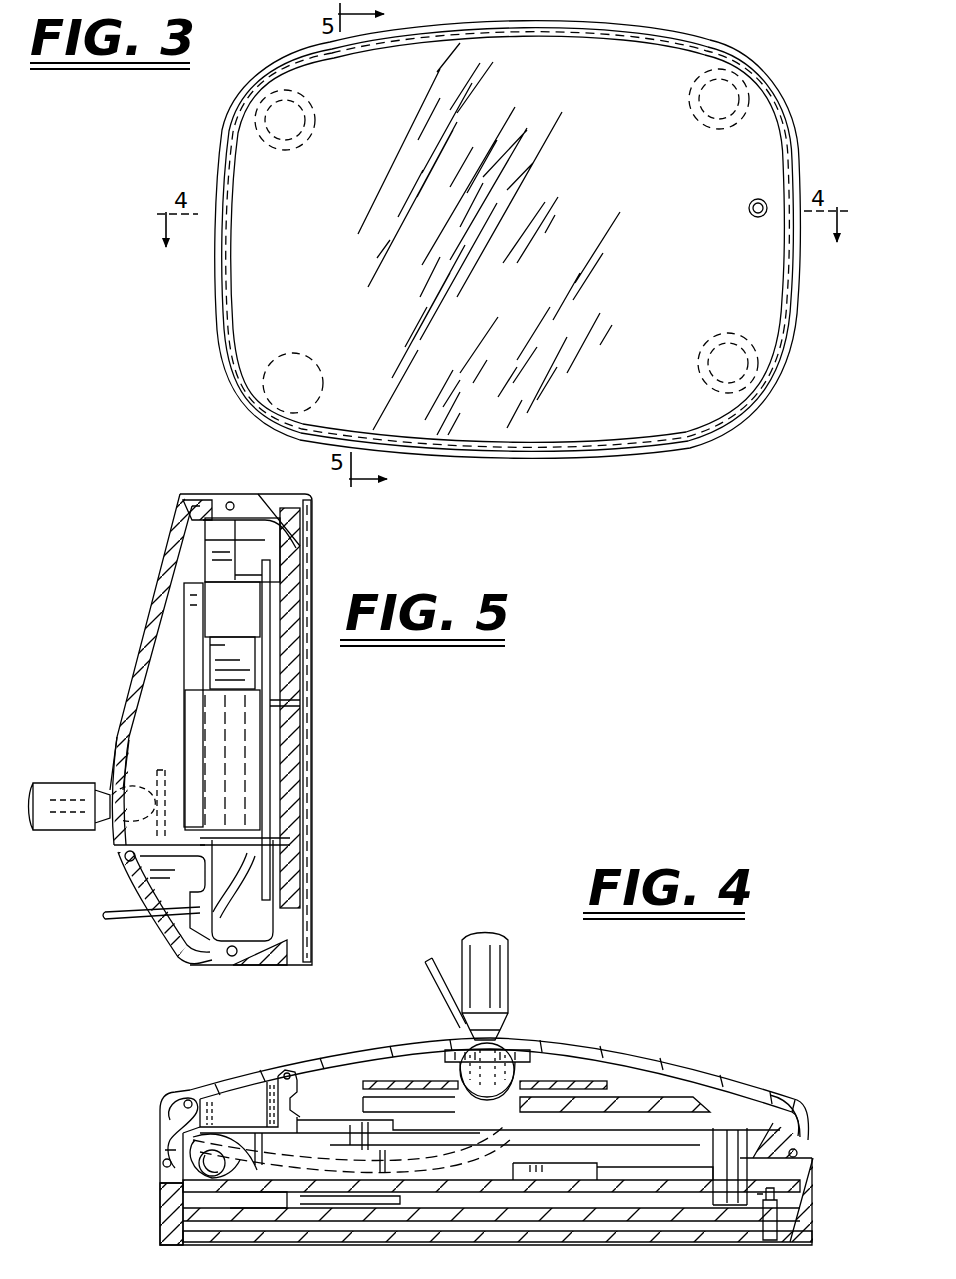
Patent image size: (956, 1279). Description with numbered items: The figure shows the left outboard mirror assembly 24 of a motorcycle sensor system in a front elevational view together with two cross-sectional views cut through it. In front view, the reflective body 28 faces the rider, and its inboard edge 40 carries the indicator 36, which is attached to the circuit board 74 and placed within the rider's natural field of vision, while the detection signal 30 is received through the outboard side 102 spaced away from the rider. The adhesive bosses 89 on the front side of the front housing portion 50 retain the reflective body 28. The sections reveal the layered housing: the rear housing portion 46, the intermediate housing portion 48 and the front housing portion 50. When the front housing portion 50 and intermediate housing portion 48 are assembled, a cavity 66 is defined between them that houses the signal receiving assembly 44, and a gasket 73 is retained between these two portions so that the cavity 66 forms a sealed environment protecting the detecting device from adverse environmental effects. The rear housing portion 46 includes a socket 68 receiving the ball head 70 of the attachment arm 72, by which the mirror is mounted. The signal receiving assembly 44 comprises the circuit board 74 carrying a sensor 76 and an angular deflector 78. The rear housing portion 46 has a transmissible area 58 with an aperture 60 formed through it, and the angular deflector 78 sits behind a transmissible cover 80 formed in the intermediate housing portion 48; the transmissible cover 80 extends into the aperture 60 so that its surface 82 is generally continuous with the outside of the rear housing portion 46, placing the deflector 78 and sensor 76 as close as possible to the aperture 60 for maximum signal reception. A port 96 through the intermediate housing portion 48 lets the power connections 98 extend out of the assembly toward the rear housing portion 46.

In FIG. 3, the left outboard mirror assembly 24 is at (183, 140).
In FIG. 5, the left outboard mirror assembly 24 is at (191, 729).
In FIG. 4, the left outboard mirror assembly 24 is at (437, 1118).
In FIG. 3, the reflective body 28 is at (648, 405).
In FIG. 5, the reflective body 28 is at (313, 930).
In FIG. 4, the reflective body 28 is at (312, 1244).
In FIG. 5, the detection signal 30 is at (108, 745).
In FIG. 4, the detection signal 30 is at (237, 1060).
In FIG. 3, the indicator 36 is at (760, 201).
In FIG. 4, the indicator 36 is at (772, 1240).
In FIG. 3, the inboard edge 40 is at (795, 352).
In FIG. 4, the inboard edge 40 is at (806, 1163).
In FIG. 5, the signal receiving assembly 44 is at (265, 846).
In FIG. 4, the signal receiving assembly 44 is at (362, 1120).
In FIG. 5, the rear housing portion 46 is at (156, 596).
In FIG. 4, the rear housing portion 46 is at (344, 1062).
In FIG. 5, the intermediate housing portion 48 is at (224, 503).
In FIG. 4, the intermediate housing portion 48 is at (163, 1160).
In FIG. 5, the front housing portion 50 is at (278, 480).
In FIG. 4, the front housing portion 50 is at (170, 1210).
In FIG. 5, the transmissible area 58 is at (115, 702).
In FIG. 4, the transmissible area 58 is at (194, 1085).
In FIG. 4, the aperture 60 is at (264, 1083).
In FIG. 5, the cavity 66 is at (280, 556).
In FIG. 4, the cavity 66 is at (458, 1200).
In FIG. 5, the socket 68 is at (120, 790).
In FIG. 4, the socket 68 is at (466, 1096).
In FIG. 5, the ball head 70 is at (154, 904).
In FIG. 4, the ball head 70 is at (500, 1068).
In FIG. 5, the attachment arm 72 is at (74, 828).
In FIG. 4, the attachment arm 72 is at (500, 965).
In FIG. 5, the gasket 73 is at (230, 957).
In FIG. 4, the gasket 73 is at (797, 1152).
In FIG. 5, the circuit board 74 is at (200, 681).
In FIG. 4, the circuit board 74 is at (214, 1128).
In FIG. 4, the sensor 76 is at (310, 1120).
In FIG. 5, the angular deflector 78 is at (247, 768).
In FIG. 4, the angular deflector 78 is at (282, 1154).
In FIG. 4, the transmissible cover 80 is at (170, 1125).
In FIG. 4, the surface of the transmissible cover 82 is at (216, 1090).
In FIG. 3, the bosses 89 is at (244, 104).
In FIG. 5, the bosses 89 is at (215, 590).
In FIG. 4, the bosses 89 is at (714, 1200).
In FIG. 4, the port 96 is at (510, 1112).
In FIG. 4, the power connections 98 is at (442, 962).
In FIG. 3, the outboard side 102 is at (216, 284).
In FIG. 4, the outboard side 102 is at (158, 1182).